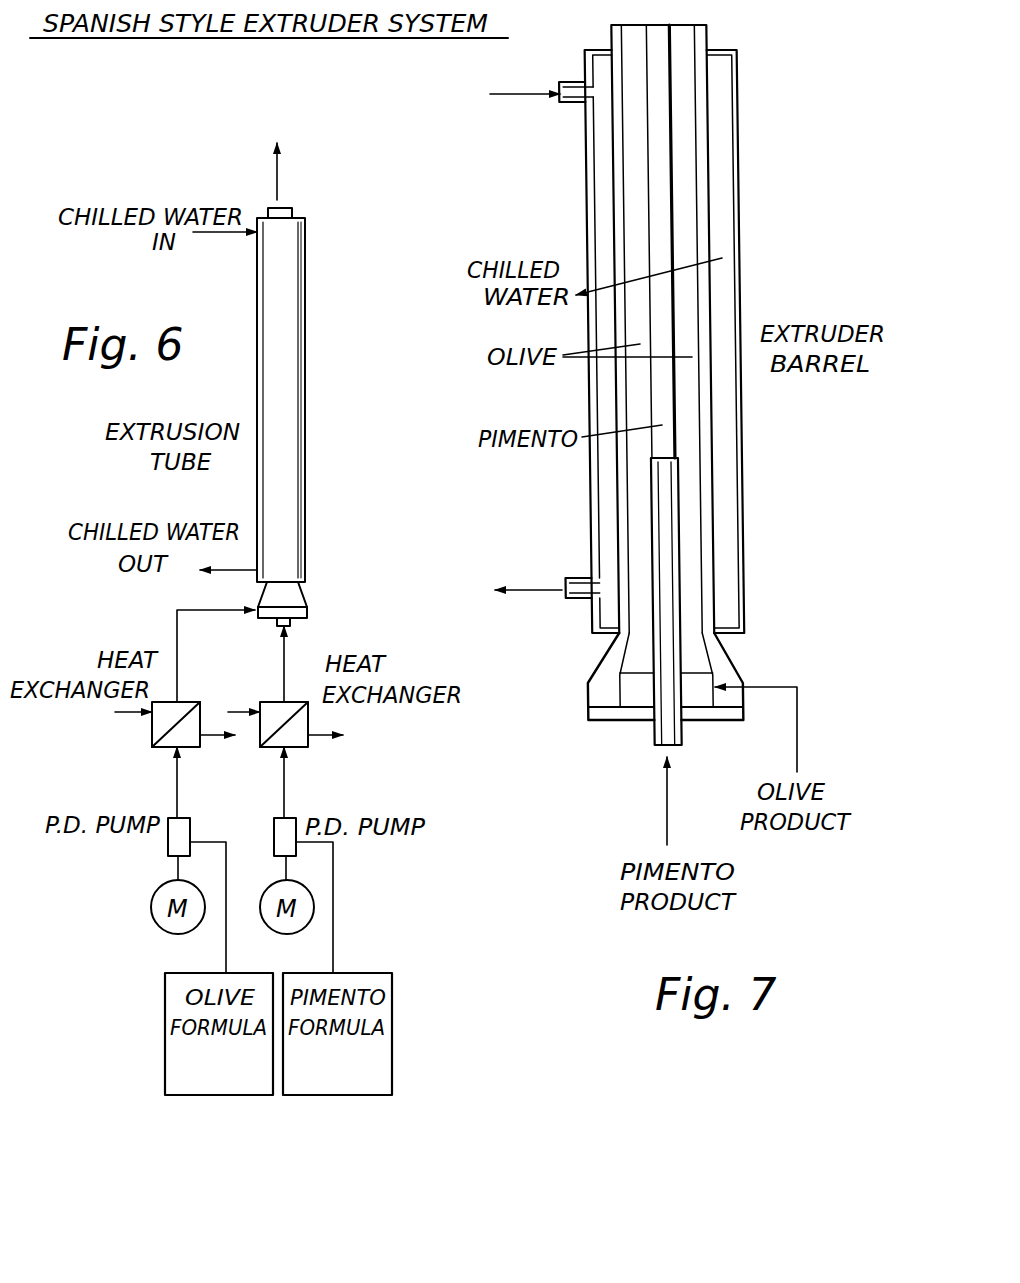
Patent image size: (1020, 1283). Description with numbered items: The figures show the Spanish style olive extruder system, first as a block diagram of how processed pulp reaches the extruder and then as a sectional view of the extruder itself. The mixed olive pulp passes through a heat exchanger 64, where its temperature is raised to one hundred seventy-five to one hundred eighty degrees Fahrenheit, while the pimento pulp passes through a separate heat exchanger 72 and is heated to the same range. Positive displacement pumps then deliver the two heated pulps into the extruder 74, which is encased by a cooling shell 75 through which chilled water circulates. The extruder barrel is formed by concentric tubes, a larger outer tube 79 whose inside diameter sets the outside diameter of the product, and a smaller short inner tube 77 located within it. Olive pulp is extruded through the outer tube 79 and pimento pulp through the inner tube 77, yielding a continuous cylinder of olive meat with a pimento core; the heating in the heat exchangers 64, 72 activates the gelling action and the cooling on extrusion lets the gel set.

In FIG. 6, the heat exchanger 64 is at (188, 700).
In FIG. 6, the heat exchanger 72 is at (272, 750).
In FIG. 6, the extruder 74 is at (310, 400).
In FIG. 7, the extruder 74 is at (575, 200).
In FIG. 7, the cooling shell 75 is at (722, 195).
In FIG. 7, the inner tube 77 is at (662, 555).
In FIG. 7, the outer tube 79 is at (680, 118).